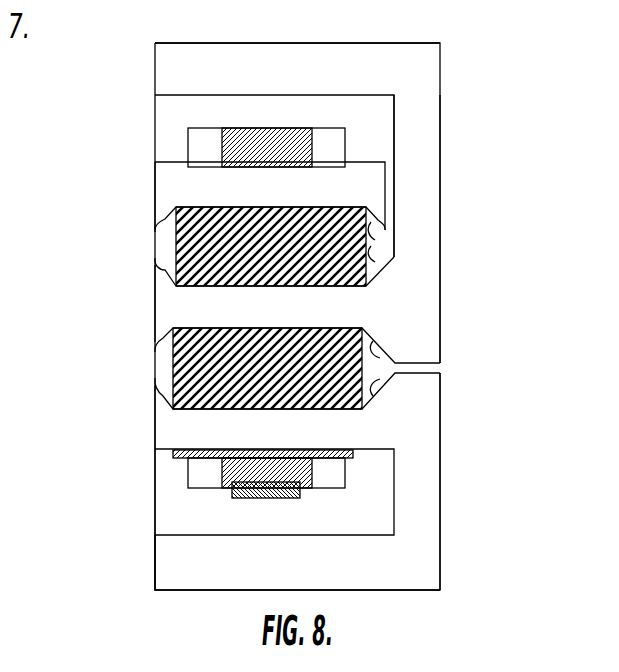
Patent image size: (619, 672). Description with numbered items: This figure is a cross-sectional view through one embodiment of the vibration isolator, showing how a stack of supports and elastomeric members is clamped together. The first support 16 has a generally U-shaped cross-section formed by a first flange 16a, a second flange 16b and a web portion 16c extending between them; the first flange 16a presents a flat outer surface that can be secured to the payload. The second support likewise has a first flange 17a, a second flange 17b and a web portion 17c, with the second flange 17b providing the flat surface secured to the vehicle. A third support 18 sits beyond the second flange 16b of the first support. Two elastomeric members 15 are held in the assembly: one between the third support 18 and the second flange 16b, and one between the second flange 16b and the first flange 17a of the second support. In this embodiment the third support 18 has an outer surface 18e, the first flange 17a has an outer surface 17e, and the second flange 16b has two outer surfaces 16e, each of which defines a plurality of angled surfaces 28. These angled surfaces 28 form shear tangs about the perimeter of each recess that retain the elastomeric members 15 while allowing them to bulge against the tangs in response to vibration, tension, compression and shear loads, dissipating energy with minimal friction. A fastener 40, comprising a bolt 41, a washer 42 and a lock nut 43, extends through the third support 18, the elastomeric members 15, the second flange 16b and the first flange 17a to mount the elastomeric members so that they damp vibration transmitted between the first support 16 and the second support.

The elastomeric member 15 is at (178, 240).
The first support 16 is at (192, 78).
The first flange 16a is at (250, 53).
The second flange 16b is at (285, 315).
The web portion 16c is at (430, 170).
The outer surface 16e is at (200, 328).
The first flange 17a is at (155, 420).
The second flange 17b is at (183, 568).
The web portion 17c is at (422, 515).
The outer surface 17e is at (248, 410).
The third support 18 is at (175, 188).
The outer surface 18e is at (273, 207).
The angled surface 28 is at (155, 232).
The fastener 40 is at (290, 130).
The bolt 41 is at (258, 497).
The washer 42 is at (173, 452).
The lock nut 43 is at (330, 480).